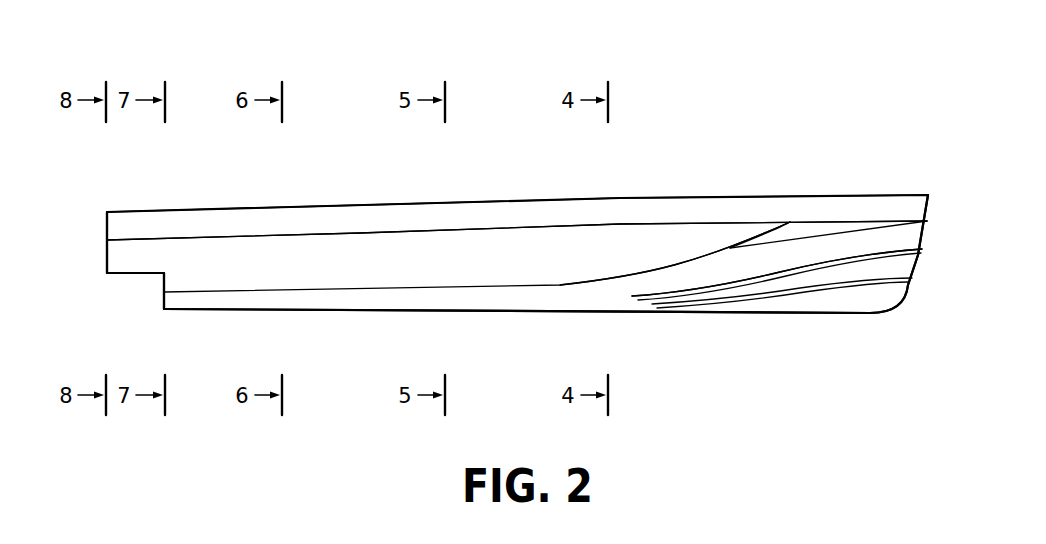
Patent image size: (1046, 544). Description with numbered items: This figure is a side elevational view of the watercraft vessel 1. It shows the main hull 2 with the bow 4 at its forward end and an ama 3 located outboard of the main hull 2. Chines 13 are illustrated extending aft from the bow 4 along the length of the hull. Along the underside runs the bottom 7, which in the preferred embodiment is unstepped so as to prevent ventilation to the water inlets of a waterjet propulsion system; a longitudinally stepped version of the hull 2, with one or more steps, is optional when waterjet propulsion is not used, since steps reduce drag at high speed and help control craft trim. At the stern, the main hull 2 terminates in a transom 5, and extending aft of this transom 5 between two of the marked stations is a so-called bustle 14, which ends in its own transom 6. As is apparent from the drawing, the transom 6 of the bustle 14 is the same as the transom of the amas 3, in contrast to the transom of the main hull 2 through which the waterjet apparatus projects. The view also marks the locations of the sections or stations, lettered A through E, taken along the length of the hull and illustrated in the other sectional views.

The watercraft vessel 1 is at (511, 134).
The main hull 2 is at (795, 252).
The ama 3 is at (388, 252).
The bow 4 is at (712, 260).
The transom 5 is at (160, 285).
The transom 6 is at (104, 253).
The bottom 7 is at (400, 311).
The chines 13 is at (872, 278).
The bustle 14 is at (137, 248).